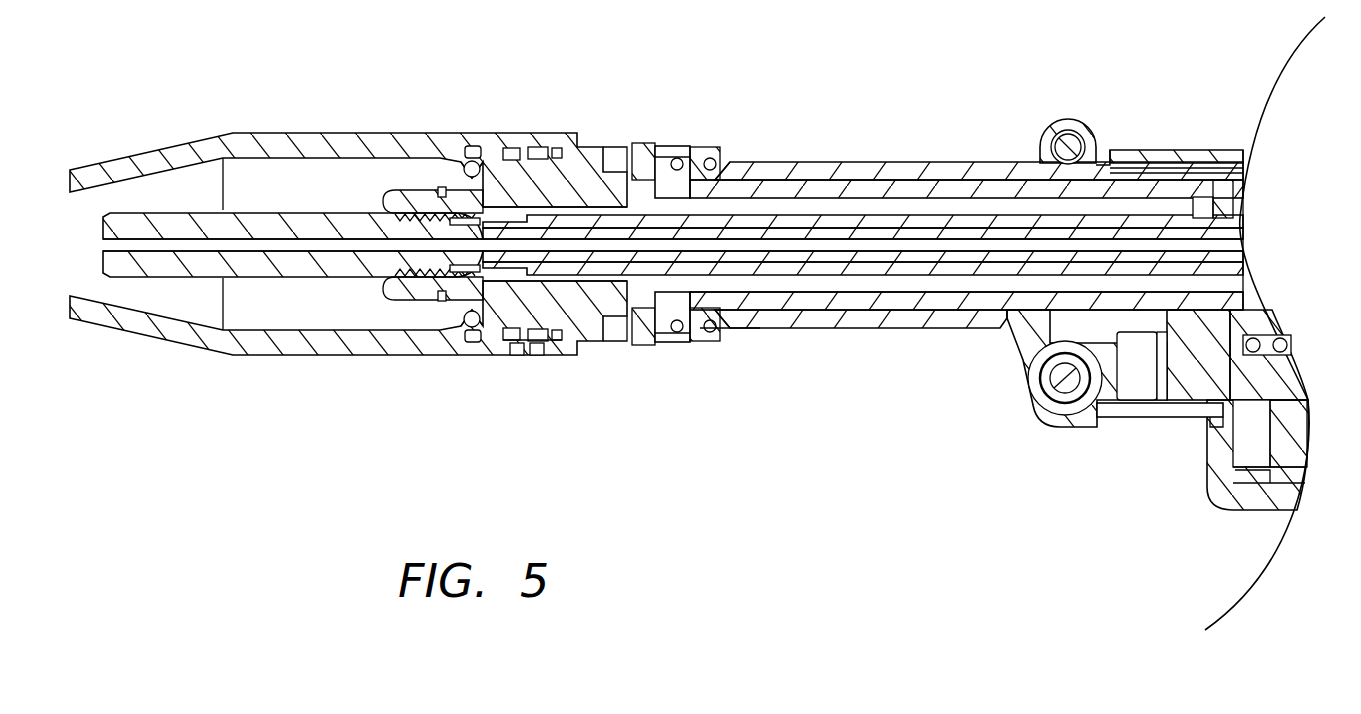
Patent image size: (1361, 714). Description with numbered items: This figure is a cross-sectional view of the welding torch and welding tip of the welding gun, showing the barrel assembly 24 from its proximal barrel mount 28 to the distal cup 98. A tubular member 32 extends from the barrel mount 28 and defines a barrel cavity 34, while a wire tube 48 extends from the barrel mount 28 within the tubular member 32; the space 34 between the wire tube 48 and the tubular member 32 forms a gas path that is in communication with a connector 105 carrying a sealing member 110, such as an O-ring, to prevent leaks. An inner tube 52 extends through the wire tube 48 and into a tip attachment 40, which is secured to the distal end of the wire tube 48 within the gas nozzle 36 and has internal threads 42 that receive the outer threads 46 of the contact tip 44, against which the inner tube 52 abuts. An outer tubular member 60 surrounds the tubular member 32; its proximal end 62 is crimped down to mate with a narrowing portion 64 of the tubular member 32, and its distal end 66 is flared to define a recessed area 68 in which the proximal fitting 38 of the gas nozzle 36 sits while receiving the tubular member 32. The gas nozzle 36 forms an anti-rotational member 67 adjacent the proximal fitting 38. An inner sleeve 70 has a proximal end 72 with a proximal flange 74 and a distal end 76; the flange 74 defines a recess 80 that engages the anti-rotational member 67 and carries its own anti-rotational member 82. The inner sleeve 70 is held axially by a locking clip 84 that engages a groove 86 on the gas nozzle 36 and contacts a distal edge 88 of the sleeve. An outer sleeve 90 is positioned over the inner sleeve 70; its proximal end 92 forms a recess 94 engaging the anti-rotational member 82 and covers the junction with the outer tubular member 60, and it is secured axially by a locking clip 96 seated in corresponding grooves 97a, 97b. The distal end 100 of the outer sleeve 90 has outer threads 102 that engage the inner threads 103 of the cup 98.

The barrel assembly 24 is at (889, 55).
The barrel mount 28 is at (1218, 194).
The tubular member 32 is at (776, 303).
The barrel cavity 34 is at (821, 282).
The gas nozzle 36 is at (734, 165).
The proximal fitting 38 is at (726, 330).
The tip attachment 40 is at (380, 278).
The internal threads 42 is at (510, 355).
The contact tip 44 is at (343, 215).
The outer threads 46 is at (422, 242).
The wire tube 48 is at (1068, 227).
The inner tube 52 is at (876, 258).
The outer tubular member 60 is at (856, 190).
The proximal end 62 is at (979, 328).
The narrowing portion 64 is at (1012, 344).
The distal end 66 is at (724, 158).
The anti-rotational member 67 is at (631, 355).
The recessed area 68 is at (681, 330).
The inner sleeve 70 is at (661, 140).
The proximal end 72 is at (650, 150).
The proximal flange 74 is at (702, 128).
The distal end 76 is at (556, 150).
The recess 80 is at (576, 350).
The anti-rotational member 82 is at (621, 152).
The locking clip 84 is at (430, 186).
The groove 86 is at (437, 193).
The distal edge 88 is at (444, 188).
The outer sleeve 90 is at (586, 135).
The proximal end 92 is at (640, 365).
The recess 94 is at (652, 372).
The locking clip 96 is at (477, 161).
The groove 97a is at (440, 320).
The groove 97b is at (470, 340).
The cup 98 is at (256, 136).
The distal end 100 is at (486, 182).
The outer threads 102 is at (520, 375).
The inner threads 103 is at (536, 375).
The connector 105 is at (1204, 400).
The sealing member 110 is at (1283, 342).